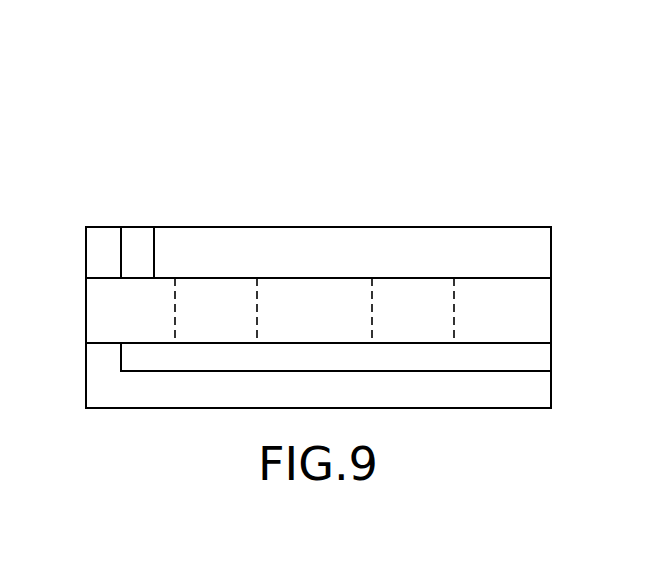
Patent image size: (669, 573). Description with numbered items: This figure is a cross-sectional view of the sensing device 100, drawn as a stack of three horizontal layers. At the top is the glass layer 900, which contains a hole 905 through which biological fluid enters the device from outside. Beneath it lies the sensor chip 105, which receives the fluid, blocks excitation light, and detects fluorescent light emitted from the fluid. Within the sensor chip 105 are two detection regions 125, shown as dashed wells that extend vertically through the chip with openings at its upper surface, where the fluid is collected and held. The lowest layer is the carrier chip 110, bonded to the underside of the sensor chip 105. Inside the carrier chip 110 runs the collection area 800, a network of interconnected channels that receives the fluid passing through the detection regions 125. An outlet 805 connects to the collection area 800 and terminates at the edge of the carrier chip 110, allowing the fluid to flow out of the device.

The sensing device 100 is at (483, 145).
The glass layer 900 is at (65, 227).
The hole 905 is at (139, 238).
The sensor chip 105 is at (65, 278).
The detection region 125 is at (239, 297).
The carrier chip 110 is at (65, 343).
The collection area 800 is at (510, 357).
The outlet 805 is at (562, 354).